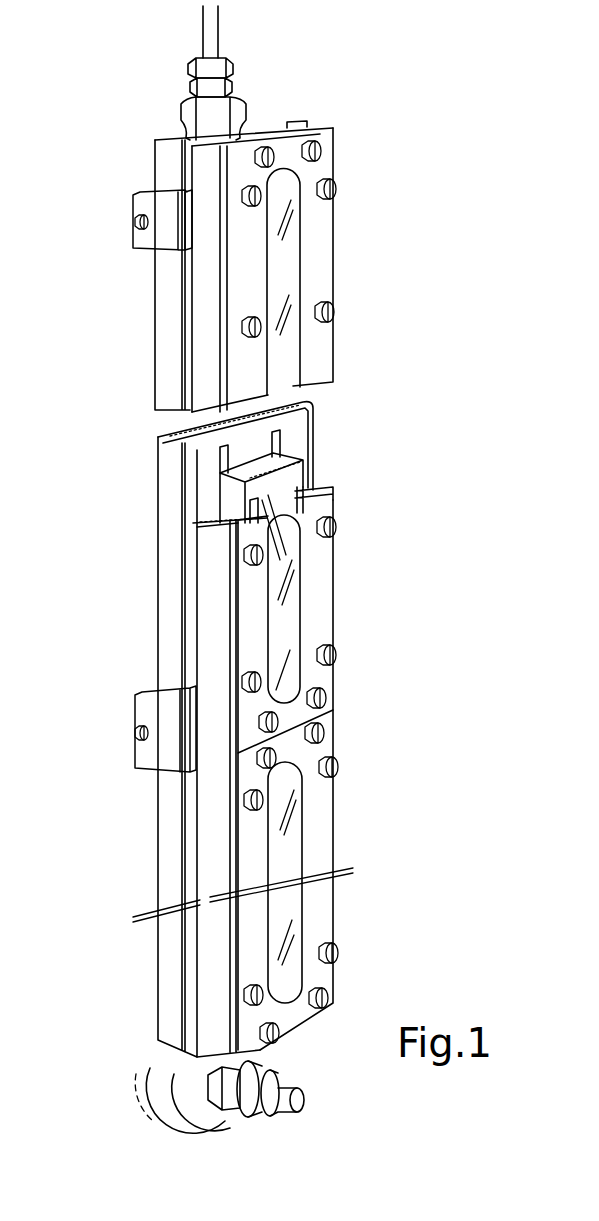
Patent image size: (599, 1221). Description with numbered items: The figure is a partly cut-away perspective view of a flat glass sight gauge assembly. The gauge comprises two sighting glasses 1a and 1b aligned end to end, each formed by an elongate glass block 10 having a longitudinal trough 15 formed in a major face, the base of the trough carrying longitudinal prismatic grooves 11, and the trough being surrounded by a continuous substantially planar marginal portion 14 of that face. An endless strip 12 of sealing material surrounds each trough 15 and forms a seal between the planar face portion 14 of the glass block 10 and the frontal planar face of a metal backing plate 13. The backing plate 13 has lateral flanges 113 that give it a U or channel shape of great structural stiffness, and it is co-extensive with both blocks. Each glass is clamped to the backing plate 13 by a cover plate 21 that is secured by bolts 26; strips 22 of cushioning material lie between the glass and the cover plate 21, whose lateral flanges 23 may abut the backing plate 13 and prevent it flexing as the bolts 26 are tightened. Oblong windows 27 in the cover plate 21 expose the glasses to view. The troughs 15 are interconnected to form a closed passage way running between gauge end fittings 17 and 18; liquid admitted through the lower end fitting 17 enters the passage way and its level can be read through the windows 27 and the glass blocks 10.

The gauge end fitting 18 is at (155, 77).
The cover plate 21 is at (313, 232).
The oblong window 27 is at (296, 268).
The bolt 26 is at (332, 313).
The longitudinal trough 15 is at (238, 463).
The metal backing plate 13 is at (190, 472).
The endless strip of sealing material 12 is at (263, 455).
The planar marginal portion 14 is at (280, 453).
The strip of cushioning material 22 is at (333, 497).
The longitudinal prismatic groove 11 is at (245, 495).
The elongate glass block 10 is at (258, 525).
The lateral flange of backing plate 113 is at (173, 858).
The lateral flange of cover plate 23 is at (203, 822).
The sighting glass 1b is at (297, 617).
The sighting glass 1a is at (290, 853).
The gauge end fitting 17 is at (145, 1028).